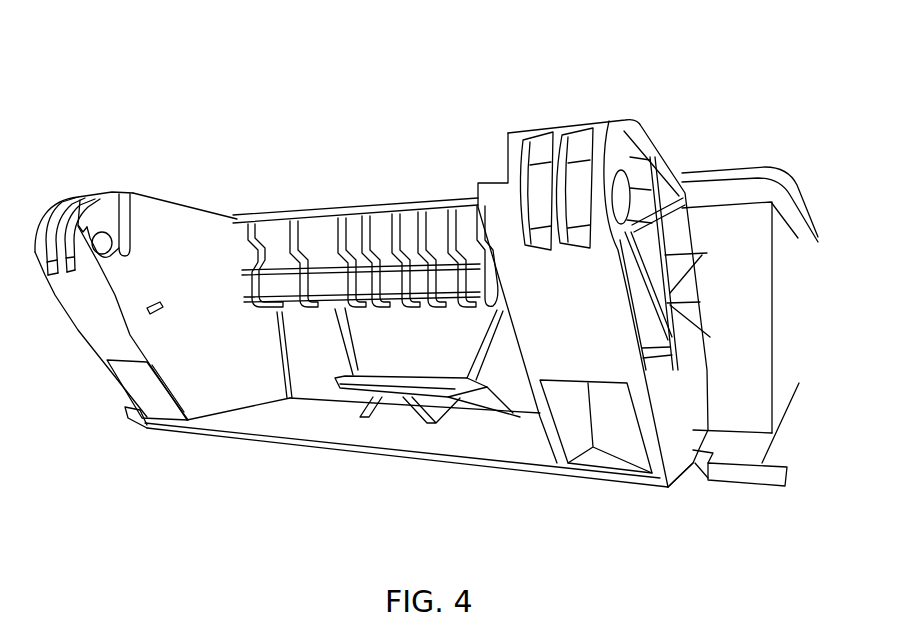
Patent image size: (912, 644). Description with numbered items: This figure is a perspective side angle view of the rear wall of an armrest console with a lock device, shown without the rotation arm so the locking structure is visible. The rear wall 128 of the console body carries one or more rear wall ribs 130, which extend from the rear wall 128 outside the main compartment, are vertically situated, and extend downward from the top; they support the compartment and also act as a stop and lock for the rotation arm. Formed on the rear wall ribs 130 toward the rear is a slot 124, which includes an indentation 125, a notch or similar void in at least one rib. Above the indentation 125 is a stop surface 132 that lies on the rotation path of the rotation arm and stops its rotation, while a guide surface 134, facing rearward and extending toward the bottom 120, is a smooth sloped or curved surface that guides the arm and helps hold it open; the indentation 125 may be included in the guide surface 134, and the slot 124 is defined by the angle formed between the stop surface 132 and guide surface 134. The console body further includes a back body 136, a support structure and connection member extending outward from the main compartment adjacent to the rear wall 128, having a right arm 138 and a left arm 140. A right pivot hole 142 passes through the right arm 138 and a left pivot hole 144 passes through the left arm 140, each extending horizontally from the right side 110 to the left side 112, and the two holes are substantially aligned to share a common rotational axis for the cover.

The right side 110 is at (803, 198).
The left side 112 is at (182, 200).
The bottom 120 is at (433, 463).
The slot 124 is at (317, 212).
The indentation 125 is at (305, 273).
The rear wall 128 is at (340, 393).
The rear wall ribs 130 is at (353, 237).
The stop surface 132 is at (283, 222).
The guide surface 134 is at (302, 315).
The back body 136 is at (389, 44).
The right arm 138 is at (630, 130).
The left arm 140 is at (105, 210).
The right pivot hole 142 is at (626, 195).
The left pivot hole 144 is at (108, 247).